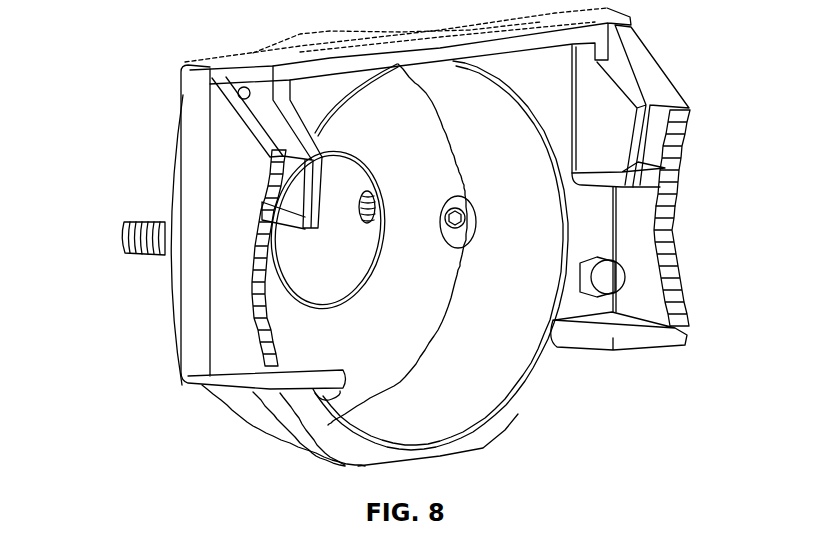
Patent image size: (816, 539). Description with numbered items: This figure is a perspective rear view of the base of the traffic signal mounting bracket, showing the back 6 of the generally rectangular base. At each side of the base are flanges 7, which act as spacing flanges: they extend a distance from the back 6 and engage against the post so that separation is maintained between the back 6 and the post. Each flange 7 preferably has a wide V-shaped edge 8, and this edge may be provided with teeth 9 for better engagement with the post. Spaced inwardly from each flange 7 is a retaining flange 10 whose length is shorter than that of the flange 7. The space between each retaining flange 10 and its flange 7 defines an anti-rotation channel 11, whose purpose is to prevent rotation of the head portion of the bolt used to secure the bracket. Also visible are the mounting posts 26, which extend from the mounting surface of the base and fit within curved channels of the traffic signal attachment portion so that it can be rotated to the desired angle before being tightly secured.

The back 6 is at (517, 392).
The flanges 7 is at (230, 333).
The wide V-shaped edge 8 is at (658, 247).
The teeth 9 is at (687, 140).
The retaining flange 10 is at (293, 143).
The anti-rotation channel 11 is at (644, 95).
The mounting posts 26 is at (122, 235).